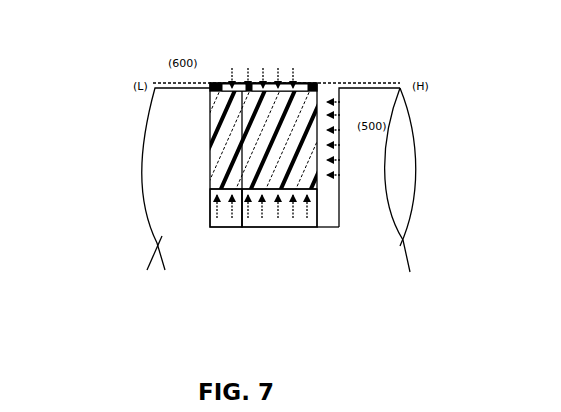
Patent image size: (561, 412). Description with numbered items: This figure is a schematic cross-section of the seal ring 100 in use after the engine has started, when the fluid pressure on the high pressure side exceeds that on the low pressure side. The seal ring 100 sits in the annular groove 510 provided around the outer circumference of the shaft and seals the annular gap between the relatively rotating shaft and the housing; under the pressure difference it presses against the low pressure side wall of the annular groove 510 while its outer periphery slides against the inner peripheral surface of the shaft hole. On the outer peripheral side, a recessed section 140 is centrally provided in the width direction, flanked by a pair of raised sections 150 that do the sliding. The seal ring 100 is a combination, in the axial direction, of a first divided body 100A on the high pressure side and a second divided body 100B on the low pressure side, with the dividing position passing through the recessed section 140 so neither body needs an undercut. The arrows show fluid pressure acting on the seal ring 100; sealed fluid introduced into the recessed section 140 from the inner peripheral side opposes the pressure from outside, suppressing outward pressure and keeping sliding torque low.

The seal ring 100 is at (332, 85).
The first divided body 100A is at (325, 219).
The second divided body 100B is at (222, 220).
The recessed section 140 is at (267, 84).
The raised sections 150 is at (219, 83).
The annular groove 510 is at (339, 187).